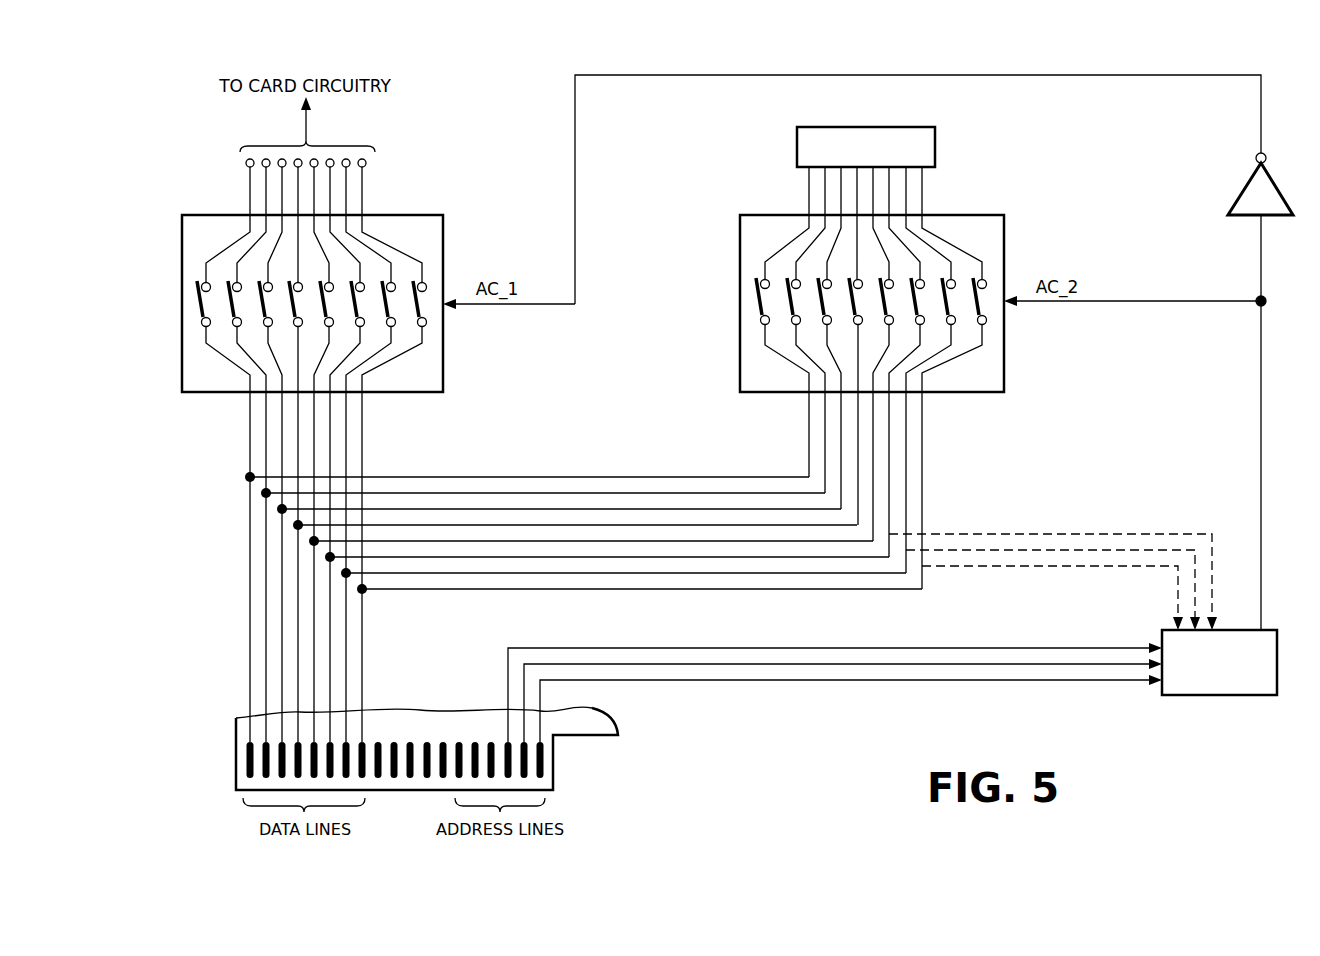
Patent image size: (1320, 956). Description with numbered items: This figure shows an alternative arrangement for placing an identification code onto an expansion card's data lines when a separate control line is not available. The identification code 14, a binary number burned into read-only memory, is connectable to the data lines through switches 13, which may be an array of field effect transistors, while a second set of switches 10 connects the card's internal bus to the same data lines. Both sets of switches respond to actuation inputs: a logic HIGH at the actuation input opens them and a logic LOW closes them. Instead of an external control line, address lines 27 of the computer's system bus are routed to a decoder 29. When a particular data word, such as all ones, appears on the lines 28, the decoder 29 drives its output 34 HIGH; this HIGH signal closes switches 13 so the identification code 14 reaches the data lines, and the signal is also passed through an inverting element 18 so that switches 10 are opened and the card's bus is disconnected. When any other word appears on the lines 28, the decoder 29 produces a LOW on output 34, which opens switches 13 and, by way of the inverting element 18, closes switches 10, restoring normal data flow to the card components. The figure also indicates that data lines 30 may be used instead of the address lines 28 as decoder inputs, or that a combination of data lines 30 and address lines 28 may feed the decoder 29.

The switches 10 is at (443, 215).
The switches 13 is at (1004, 215).
The identification code 14 is at (797, 138).
The inverter 18 is at (1250, 194).
The output 34 is at (1258, 428).
The data lines 30 is at (1058, 518).
The decoder 29 is at (1212, 695).
The address lines 27 is at (633, 681).
The lines 28 is at (836, 703).